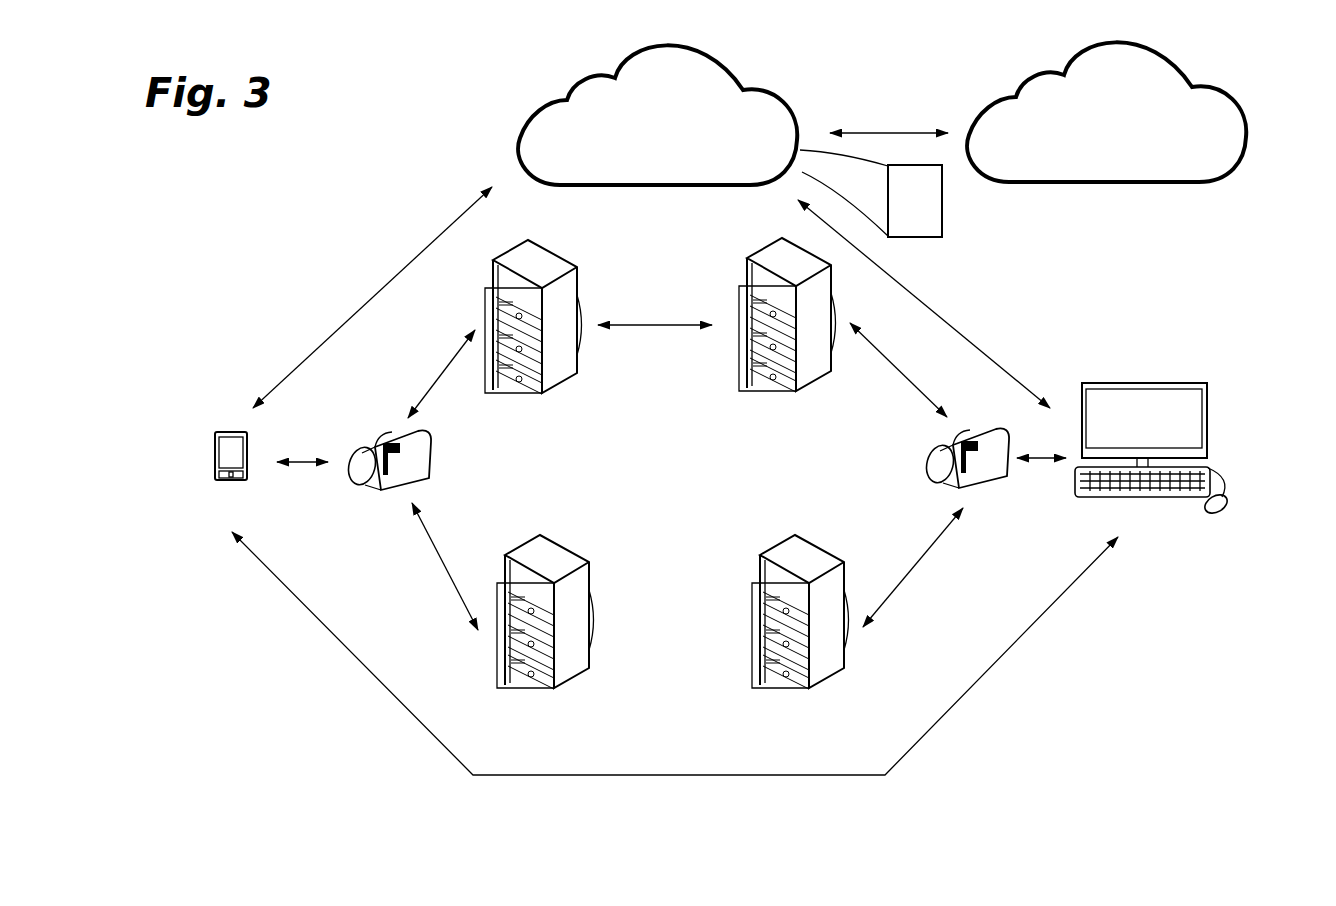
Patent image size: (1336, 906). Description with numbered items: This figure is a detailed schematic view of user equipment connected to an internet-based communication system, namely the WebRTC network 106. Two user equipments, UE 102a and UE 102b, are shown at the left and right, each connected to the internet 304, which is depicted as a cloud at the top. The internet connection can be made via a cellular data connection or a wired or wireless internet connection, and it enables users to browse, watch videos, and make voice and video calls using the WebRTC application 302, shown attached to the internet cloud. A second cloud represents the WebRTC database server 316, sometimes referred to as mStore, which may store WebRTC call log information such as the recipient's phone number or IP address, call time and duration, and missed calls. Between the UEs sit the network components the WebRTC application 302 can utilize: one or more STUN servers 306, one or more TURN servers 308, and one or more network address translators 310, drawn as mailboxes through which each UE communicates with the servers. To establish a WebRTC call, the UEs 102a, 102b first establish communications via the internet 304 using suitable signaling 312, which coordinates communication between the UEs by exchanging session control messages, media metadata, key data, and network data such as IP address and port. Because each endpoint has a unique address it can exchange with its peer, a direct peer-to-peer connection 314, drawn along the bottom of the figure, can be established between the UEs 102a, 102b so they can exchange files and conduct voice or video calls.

The WebRTC network 106 is at (242, 182).
The UE 102a is at (215, 455).
The UE 102b is at (1207, 427).
The WebRTC application 302 is at (871, 193).
The internet 304 is at (518, 150).
The STUN server 306 is at (578, 283).
The TURN server 308 is at (588, 578).
The network address translator 310 is at (393, 433).
The signaling 312 is at (376, 290).
The direct peer-to-peer connection 314 is at (697, 774).
The WebRTC database server 316 is at (977, 112).